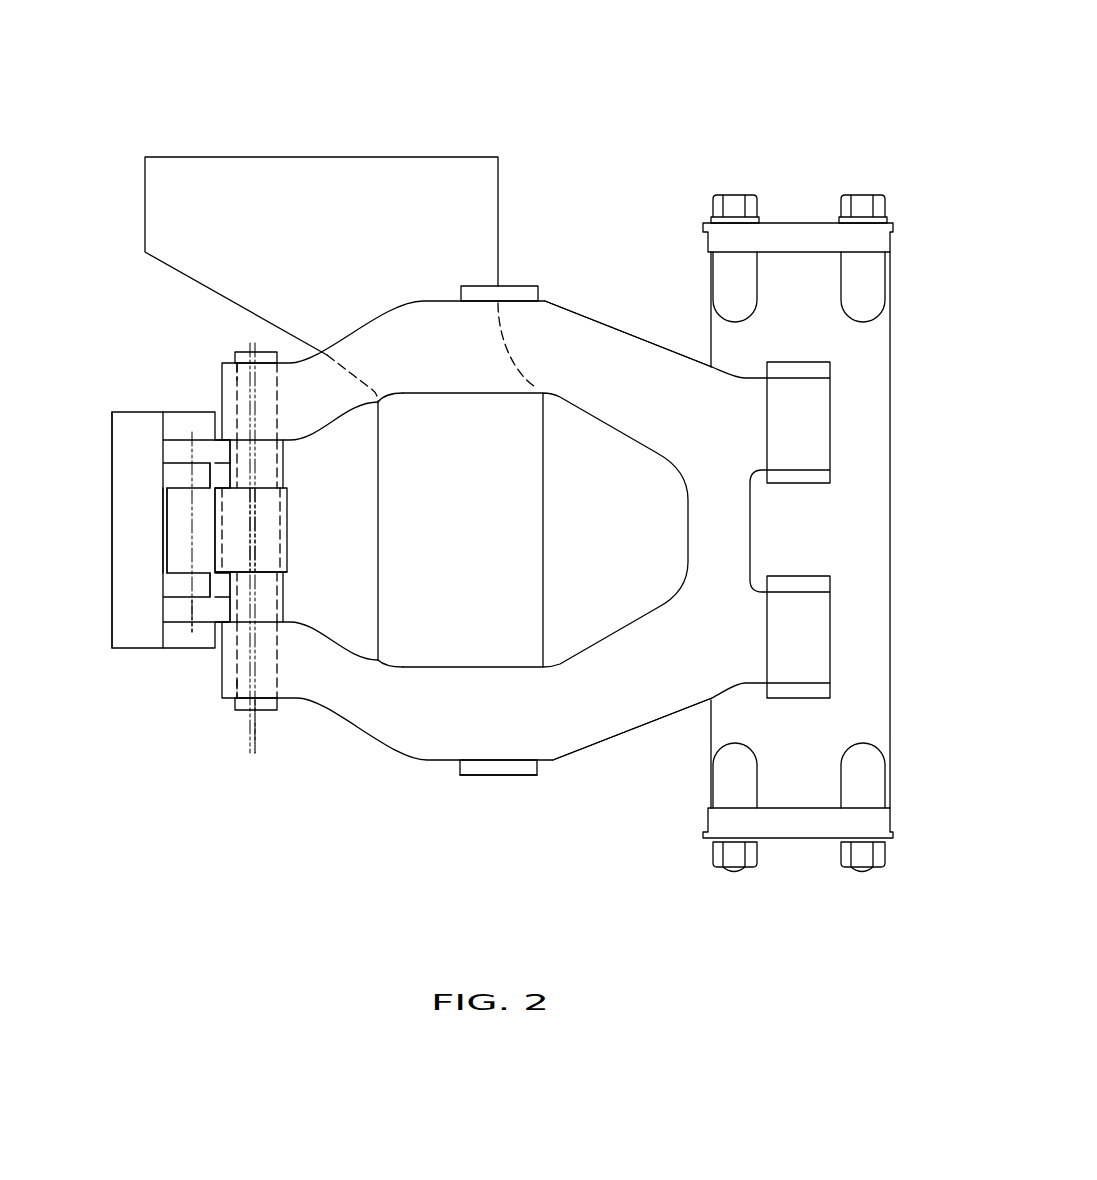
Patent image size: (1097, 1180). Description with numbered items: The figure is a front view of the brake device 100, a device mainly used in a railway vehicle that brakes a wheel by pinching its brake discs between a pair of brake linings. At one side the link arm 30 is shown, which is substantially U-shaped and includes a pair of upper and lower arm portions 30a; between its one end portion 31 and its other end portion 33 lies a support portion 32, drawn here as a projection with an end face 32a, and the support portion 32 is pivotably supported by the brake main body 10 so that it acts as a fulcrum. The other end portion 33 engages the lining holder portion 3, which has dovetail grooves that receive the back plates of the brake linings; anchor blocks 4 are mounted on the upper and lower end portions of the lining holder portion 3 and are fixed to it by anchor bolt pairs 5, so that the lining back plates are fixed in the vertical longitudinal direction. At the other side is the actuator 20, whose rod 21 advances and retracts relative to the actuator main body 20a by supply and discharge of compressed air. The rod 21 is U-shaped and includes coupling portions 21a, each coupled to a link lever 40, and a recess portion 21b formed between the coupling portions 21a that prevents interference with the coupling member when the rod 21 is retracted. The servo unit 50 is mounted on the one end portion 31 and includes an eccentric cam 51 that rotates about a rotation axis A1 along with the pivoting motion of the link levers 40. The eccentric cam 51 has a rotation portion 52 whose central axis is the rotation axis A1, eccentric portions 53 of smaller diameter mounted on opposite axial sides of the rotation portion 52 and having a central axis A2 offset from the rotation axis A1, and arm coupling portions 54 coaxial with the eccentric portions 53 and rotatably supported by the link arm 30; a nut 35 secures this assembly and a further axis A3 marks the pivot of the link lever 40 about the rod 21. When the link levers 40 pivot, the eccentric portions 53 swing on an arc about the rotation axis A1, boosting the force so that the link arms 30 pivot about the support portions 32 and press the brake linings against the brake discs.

The brake device 100 is at (889, 104).
The lining holder portion 3 is at (850, 343).
The anchor block 4 is at (880, 823).
The anchor bolt pair 5 is at (867, 855).
The brake main body 10 is at (515, 532).
The actuator 20 is at (119, 410).
The actuator main body 20a is at (125, 437).
The rod 21 is at (163, 512).
The coupling portion 21a is at (183, 612).
The recess portion 21b is at (167, 573).
The link arm 30 is at (641, 333).
The arm portion 30a is at (587, 725).
The one end portion 31 is at (233, 668).
The support portion 32 is at (510, 735).
The projection end face 32a is at (483, 768).
The other end portion 33 is at (812, 638).
The nut 35 is at (270, 527).
The link lever 40 is at (188, 618).
The servo unit 50 is at (231, 351).
The eccentric cam 51 is at (290, 498).
The rotation portion 52 is at (290, 560).
The eccentric portion 53 is at (283, 598).
The arm coupling portion 54 is at (232, 688).
The rotation axis A1 is at (246, 745).
The central axis A2 is at (258, 745).
The axis A3 is at (192, 635).